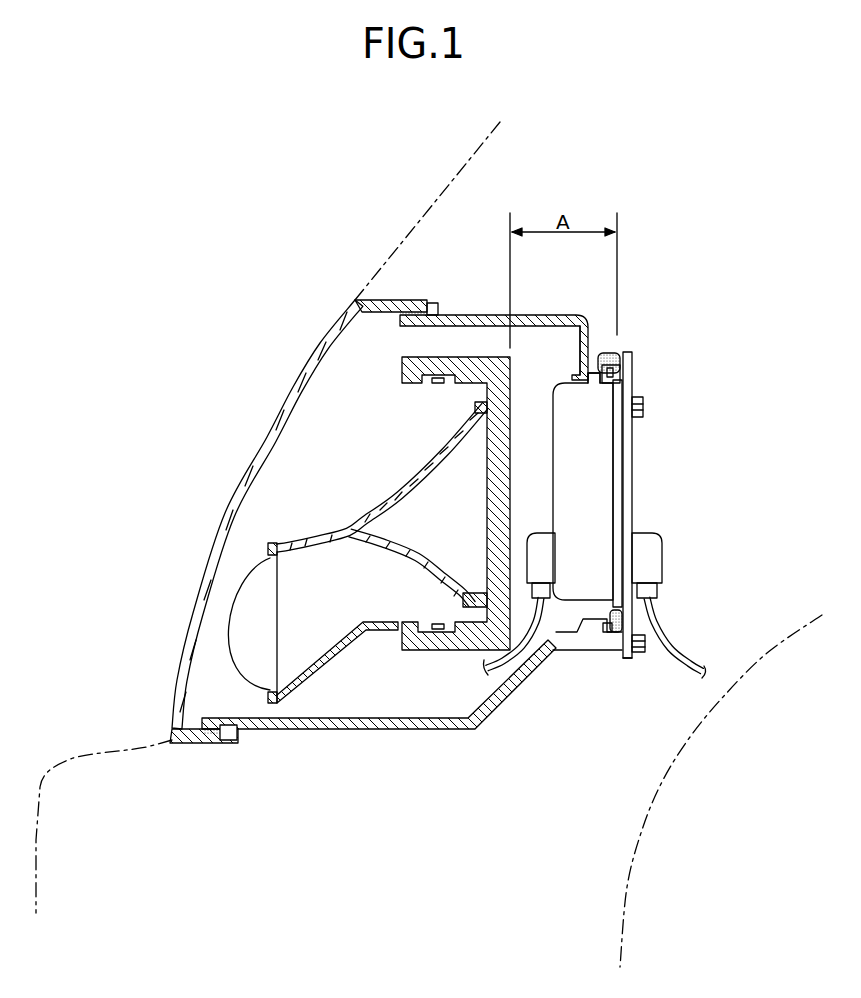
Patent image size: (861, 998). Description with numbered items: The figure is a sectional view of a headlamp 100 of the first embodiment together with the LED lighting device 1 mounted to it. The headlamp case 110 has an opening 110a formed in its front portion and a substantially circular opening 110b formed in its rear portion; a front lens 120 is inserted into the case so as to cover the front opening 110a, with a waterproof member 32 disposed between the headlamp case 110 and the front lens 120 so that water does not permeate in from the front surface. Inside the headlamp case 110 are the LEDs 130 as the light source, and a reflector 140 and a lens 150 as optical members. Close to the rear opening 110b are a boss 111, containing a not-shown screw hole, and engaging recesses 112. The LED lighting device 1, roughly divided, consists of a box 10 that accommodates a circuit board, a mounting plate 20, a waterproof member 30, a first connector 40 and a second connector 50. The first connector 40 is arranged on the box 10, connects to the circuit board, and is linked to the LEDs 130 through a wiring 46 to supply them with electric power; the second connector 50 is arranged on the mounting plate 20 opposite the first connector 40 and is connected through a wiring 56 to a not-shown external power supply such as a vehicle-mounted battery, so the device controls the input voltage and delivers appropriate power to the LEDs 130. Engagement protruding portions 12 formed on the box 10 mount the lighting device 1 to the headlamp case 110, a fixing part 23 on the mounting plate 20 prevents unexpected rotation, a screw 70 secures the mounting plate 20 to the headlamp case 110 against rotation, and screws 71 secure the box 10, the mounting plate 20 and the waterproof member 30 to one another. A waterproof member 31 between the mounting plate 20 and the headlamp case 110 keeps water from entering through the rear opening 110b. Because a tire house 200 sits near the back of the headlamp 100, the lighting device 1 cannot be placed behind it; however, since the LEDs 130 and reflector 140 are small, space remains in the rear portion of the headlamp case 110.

The LED lighting device 1 is at (635, 508).
The box 10 is at (605, 402).
The engagement protruding portions 12 is at (598, 385).
The mounting plate 20 is at (628, 438).
The fixing part 23 is at (628, 657).
The waterproof member 30 is at (620, 476).
The waterproof member 31 is at (620, 353).
The waterproof member 32 is at (430, 303).
The first connector 40 is at (540, 545).
The wiring 46 is at (507, 668).
The second connector 50 is at (650, 545).
The wiring 56 is at (656, 630).
The screw 70 is at (642, 652).
The screws 71 is at (645, 405).
The headlamp 100 is at (336, 300).
The headlamp case 110 is at (478, 315).
The opening (front opening) 110a is at (330, 412).
The opening (rear opening) 110b is at (590, 607).
The boss 111 is at (593, 652).
The engaging recesses 112 is at (580, 377).
The front lens 120 is at (318, 348).
The LEDs 130 is at (437, 386).
The reflector 140 is at (342, 530).
The lens 150 is at (250, 600).
The tire house 200 is at (780, 643).